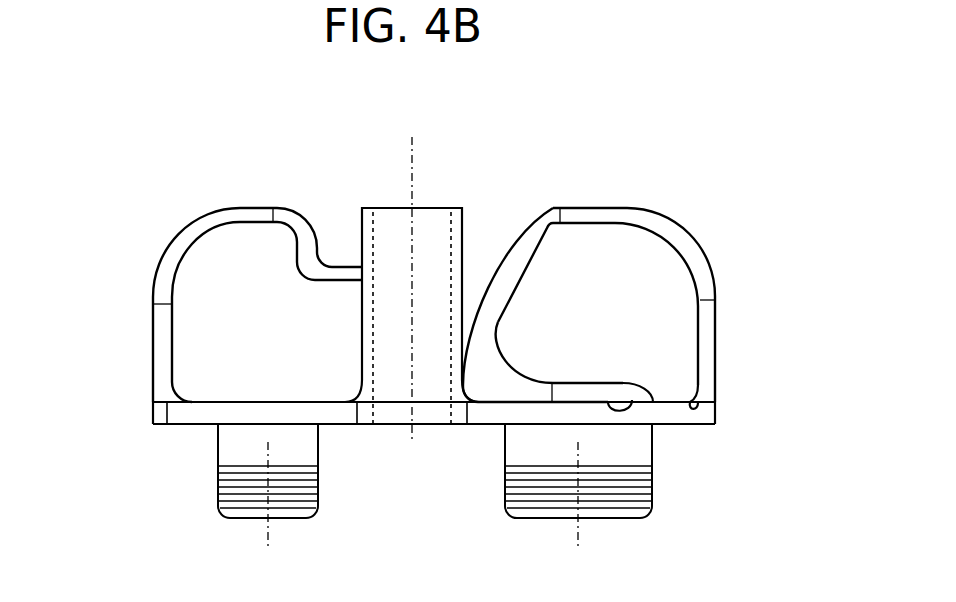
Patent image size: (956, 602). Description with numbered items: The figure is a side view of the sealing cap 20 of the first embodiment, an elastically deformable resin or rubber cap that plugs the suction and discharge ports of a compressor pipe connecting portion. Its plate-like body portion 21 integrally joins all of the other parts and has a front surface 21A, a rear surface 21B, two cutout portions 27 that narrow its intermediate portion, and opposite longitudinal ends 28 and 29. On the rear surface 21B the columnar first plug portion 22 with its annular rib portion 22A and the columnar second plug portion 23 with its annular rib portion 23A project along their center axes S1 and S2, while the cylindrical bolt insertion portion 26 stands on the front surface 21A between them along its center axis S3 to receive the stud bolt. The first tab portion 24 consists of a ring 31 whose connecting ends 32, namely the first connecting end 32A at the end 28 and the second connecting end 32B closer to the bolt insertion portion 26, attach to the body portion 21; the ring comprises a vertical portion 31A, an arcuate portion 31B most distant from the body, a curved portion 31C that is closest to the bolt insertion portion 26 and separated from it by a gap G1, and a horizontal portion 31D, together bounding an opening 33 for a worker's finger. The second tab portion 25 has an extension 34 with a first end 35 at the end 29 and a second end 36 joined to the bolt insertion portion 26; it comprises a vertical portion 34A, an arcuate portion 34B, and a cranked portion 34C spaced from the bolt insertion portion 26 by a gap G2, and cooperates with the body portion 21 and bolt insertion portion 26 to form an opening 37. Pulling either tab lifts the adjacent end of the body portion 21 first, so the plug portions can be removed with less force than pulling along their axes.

The sealing cap 20 is at (222, 170).
The plate-like body portion 21 is at (503, 415).
The front surface 21A is at (268, 402).
The rear surface 21B is at (237, 424).
The first plug portion 22 is at (647, 513).
The annular rib portion 22A is at (653, 477).
The second plug portion 23 is at (225, 513).
The annular rib portion 23A is at (318, 483).
The first tab portion 24 is at (685, 233).
The second tab portion 25 is at (188, 230).
The bolt insertion portion 26 is at (397, 208).
The cutout portions 27 is at (387, 415).
The end of body portion 28 is at (717, 412).
The end of body portion 29 is at (150, 413).
The ring 31 is at (603, 208).
The vertical portion 31A is at (708, 338).
The arcuate portion 31B is at (688, 252).
The curved portion 31C is at (513, 263).
The horizontal portion 31D is at (580, 380).
The connecting ends 32 is at (690, 325).
The first connecting end 32A is at (688, 397).
The second connecting end 32B is at (618, 395).
The opening 33 is at (607, 281).
The extension 34 is at (163, 265).
The vertical portion 34A is at (158, 350).
The arcuate portion 34B is at (205, 227).
The cranked portion 34C is at (303, 275).
The first end 35 is at (165, 425).
The second end 36 is at (364, 280).
The opening 37 is at (302, 328).
The gap G1 is at (470, 313).
The gap G2 is at (333, 245).
The center axis S1 is at (579, 514).
The center axis S2 is at (268, 509).
The center axis S3 is at (414, 279).